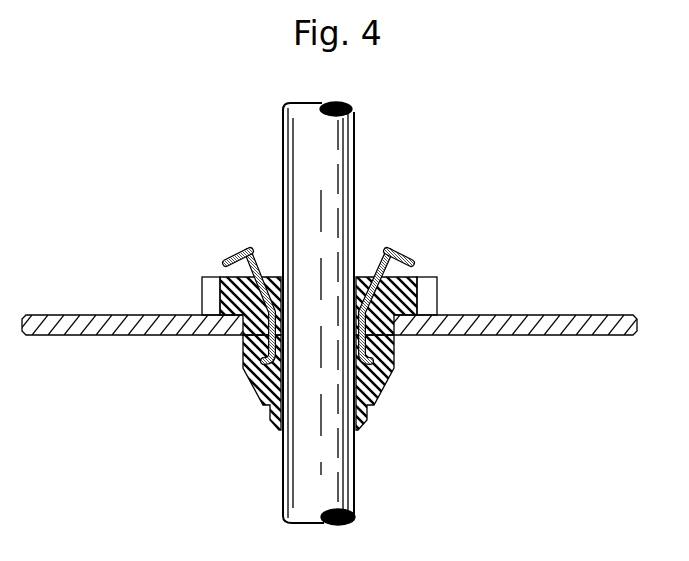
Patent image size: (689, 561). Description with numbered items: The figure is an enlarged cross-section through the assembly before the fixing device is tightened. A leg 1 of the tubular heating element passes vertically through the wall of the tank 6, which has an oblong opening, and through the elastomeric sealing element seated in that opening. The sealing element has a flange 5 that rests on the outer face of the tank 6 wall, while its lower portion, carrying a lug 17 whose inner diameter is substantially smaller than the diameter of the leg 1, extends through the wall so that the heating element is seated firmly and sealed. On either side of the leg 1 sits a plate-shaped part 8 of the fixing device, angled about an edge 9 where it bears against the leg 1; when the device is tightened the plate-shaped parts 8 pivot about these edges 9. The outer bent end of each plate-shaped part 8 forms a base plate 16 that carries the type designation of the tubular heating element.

The leg 1 is at (348, 131).
The flange 5 is at (418, 296).
The tank 6 is at (582, 322).
The plate-shaped part 8 is at (259, 250).
The edge 9 is at (353, 305).
The base plate 16 is at (230, 255).
The lug 17 is at (368, 407).